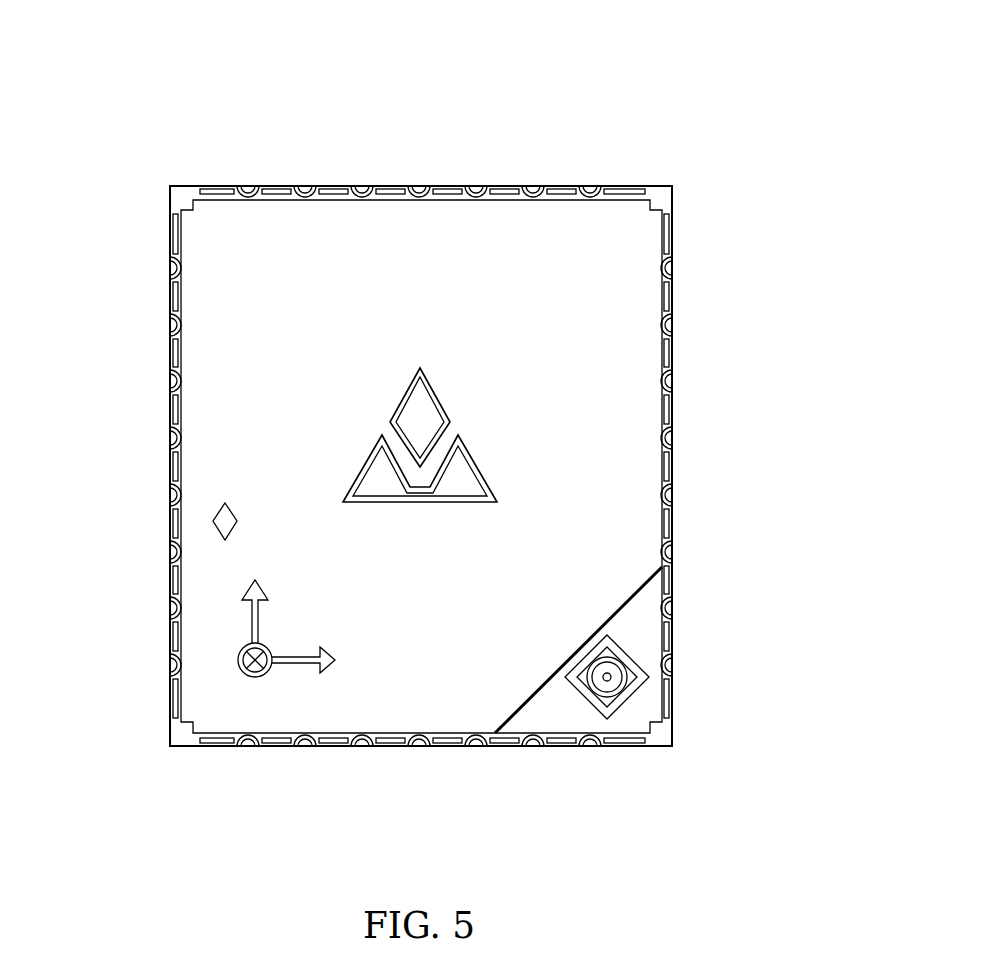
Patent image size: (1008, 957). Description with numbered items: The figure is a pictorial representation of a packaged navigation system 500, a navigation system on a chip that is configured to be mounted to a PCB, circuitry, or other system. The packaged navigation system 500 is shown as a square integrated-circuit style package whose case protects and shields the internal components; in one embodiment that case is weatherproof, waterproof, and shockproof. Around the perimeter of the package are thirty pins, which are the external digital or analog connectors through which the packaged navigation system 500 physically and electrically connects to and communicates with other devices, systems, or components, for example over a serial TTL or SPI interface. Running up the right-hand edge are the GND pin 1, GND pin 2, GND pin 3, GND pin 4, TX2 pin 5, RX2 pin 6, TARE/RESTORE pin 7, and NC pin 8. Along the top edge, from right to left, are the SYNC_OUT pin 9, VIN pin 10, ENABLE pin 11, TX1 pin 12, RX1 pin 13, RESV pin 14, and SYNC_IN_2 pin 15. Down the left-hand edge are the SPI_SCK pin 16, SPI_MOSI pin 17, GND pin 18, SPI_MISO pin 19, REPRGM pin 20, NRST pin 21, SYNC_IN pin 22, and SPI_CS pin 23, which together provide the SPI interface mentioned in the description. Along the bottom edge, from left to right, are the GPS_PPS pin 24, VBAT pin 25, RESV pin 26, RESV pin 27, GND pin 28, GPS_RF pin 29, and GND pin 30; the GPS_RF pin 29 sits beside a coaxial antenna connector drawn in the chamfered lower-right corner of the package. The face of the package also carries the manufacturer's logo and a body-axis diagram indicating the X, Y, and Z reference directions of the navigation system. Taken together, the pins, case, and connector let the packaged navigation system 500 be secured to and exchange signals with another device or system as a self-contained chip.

The packaged navigation system 500 is at (668, 75).
The GND pin 1 is at (703, 664).
The GND pin 2 is at (703, 607).
The GND pin 3 is at (703, 551).
The GND pin 4 is at (703, 494).
The TX2 pin 5 is at (699, 437).
The RX2 pin 6 is at (700, 380).
The TARE/RESTORE pin 7 is at (754, 324).
The NC pin 8 is at (695, 267).
The SYNC_OUT pin 9 is at (590, 127).
The VIN pin 10 is at (533, 156).
The ENABLE pin 11 is at (476, 134).
The TX1 pin 12 is at (419, 154).
The RX1 pin 13 is at (362, 153).
The RESV pin 14 is at (305, 147).
The SYNC_IN_2 pin 15 is at (248, 121).
The SPI_SCK pin 16 is at (116, 267).
The SPI_MOSI pin 17 is at (110, 324).
The GND pin 18 is at (132, 380).
The SPI_MISO pin 19 is at (110, 437).
The REPRGM pin 20 is at (113, 494).
The NRST pin 21 is at (128, 551).
The SYNC_IN pin 22 is at (114, 607).
The SPI_CS pin 23 is at (122, 664).
The GPS_PPS pin 24 is at (248, 803).
The VBAT pin 25 is at (305, 785).
The RESV pin 26 is at (362, 786).
The RESV pin 27 is at (419, 786).
The GND pin 28 is at (476, 783).
The GPS_RF pin 29 is at (533, 798).
The GND pin 30 is at (590, 783).